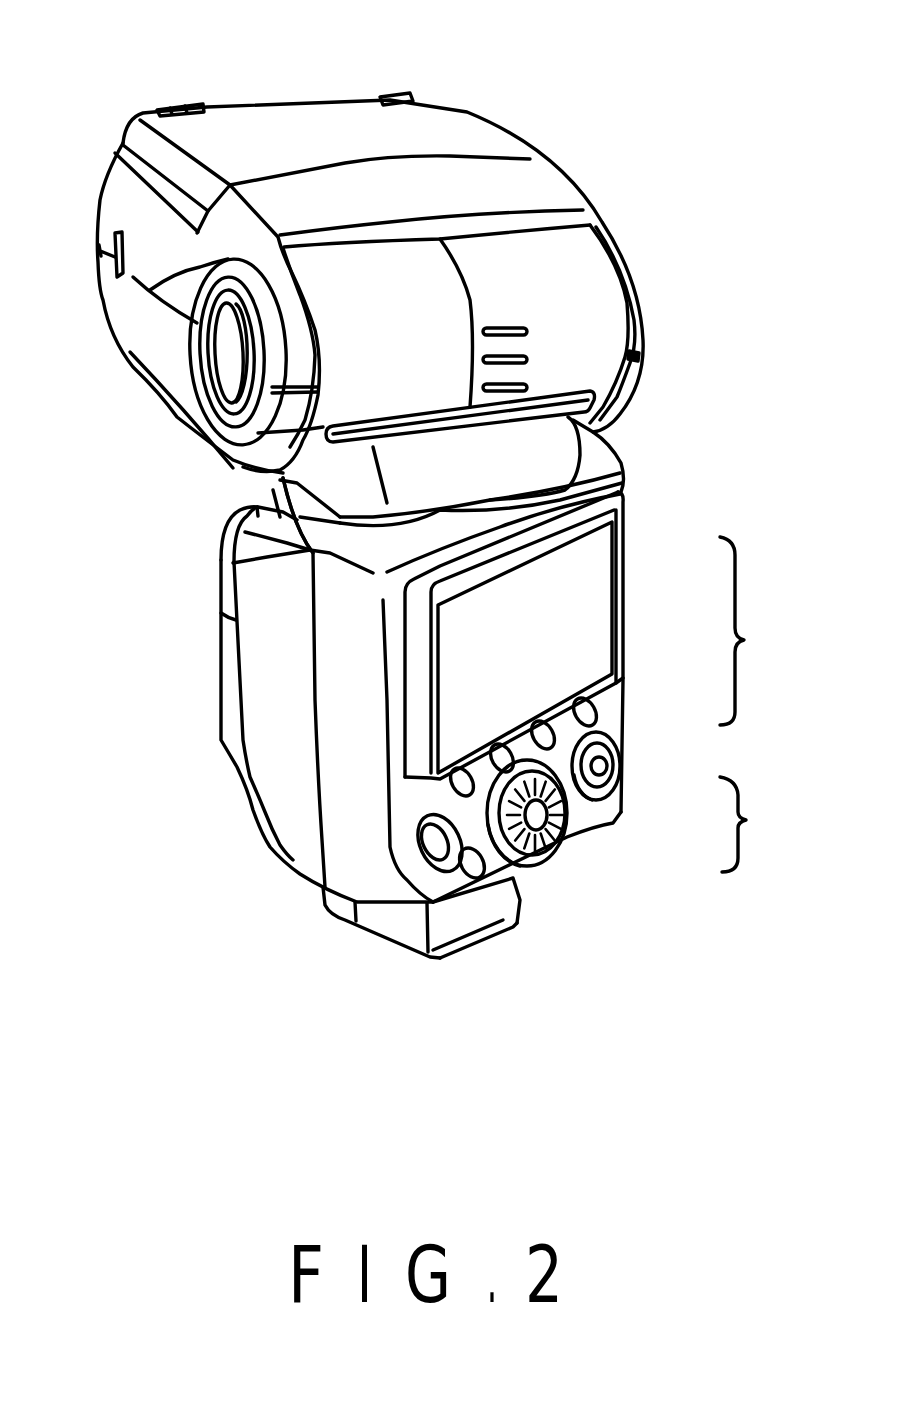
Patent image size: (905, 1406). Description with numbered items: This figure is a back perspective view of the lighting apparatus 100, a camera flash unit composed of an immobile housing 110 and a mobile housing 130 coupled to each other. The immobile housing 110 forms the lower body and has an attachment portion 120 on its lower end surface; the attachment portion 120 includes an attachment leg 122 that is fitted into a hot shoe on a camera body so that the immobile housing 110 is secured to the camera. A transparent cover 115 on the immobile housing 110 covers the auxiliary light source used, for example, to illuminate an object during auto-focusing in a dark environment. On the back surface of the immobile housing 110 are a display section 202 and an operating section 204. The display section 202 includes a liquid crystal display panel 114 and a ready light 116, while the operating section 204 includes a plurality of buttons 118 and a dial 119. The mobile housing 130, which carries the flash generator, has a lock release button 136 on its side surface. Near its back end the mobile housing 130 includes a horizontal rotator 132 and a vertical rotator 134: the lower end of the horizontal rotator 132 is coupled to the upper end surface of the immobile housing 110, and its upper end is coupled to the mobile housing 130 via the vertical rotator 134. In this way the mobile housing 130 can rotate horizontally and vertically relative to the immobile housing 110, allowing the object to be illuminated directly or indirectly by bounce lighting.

The lighting apparatus 100 is at (784, 45).
The immobile housing 110 is at (288, 836).
The liquid crystal display panel 114 is at (600, 561).
The transparent cover 115 is at (235, 727).
The ready light 116 is at (600, 707).
The buttons 118 is at (613, 777).
The dial 119 is at (573, 823).
The attachment portion 120 is at (486, 965).
The attachment leg 122 is at (513, 930).
The mobile housing 130 is at (457, 133).
The horizontal rotator 132 is at (228, 559).
The vertical rotator 134 is at (330, 413).
The lock release button 136 is at (218, 365).
The display section 202 is at (767, 631).
The operating section 204 is at (767, 824).